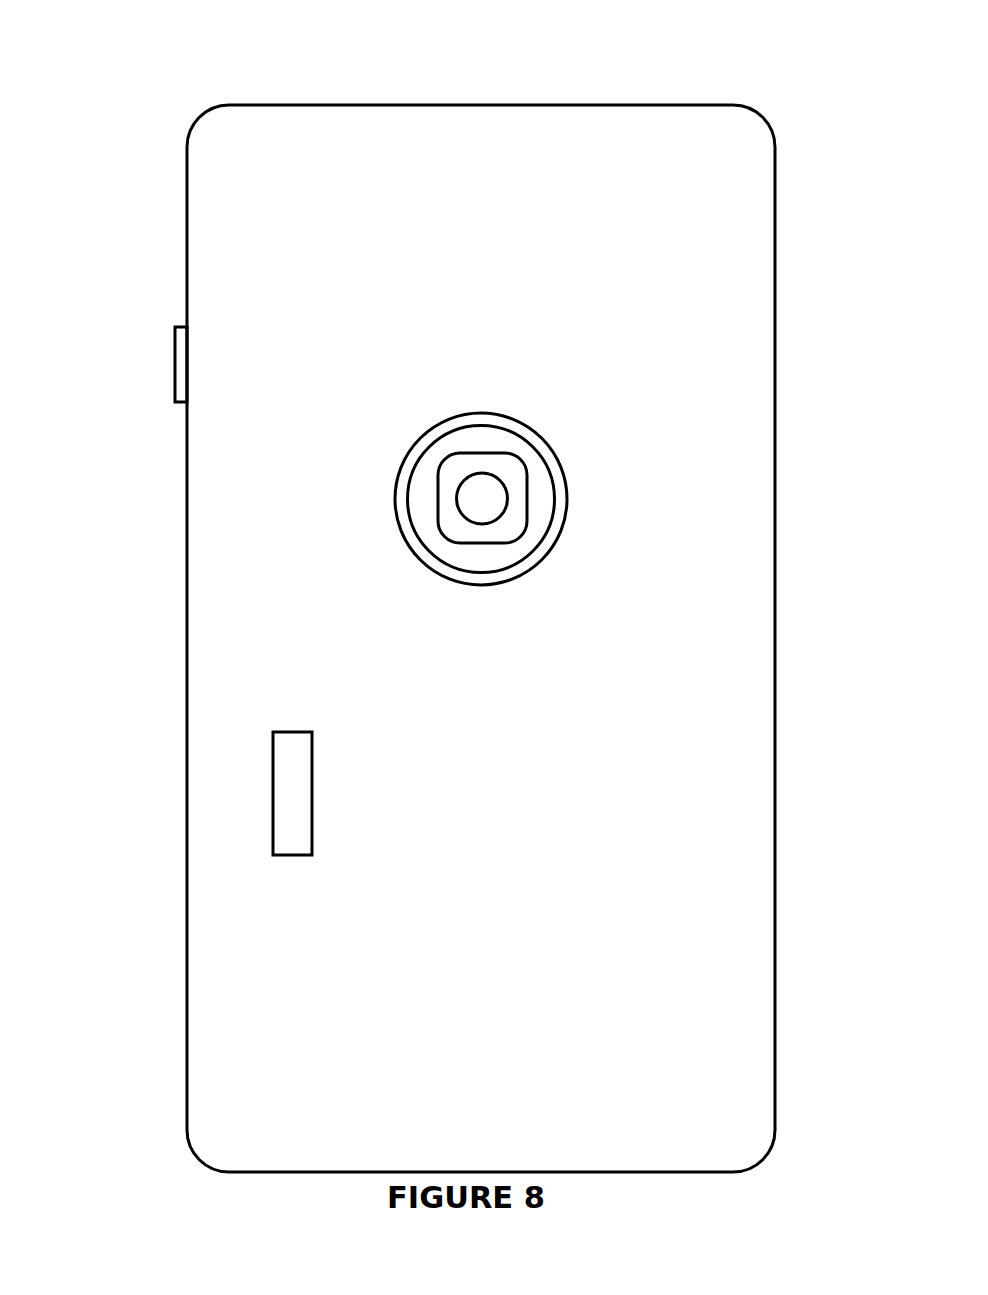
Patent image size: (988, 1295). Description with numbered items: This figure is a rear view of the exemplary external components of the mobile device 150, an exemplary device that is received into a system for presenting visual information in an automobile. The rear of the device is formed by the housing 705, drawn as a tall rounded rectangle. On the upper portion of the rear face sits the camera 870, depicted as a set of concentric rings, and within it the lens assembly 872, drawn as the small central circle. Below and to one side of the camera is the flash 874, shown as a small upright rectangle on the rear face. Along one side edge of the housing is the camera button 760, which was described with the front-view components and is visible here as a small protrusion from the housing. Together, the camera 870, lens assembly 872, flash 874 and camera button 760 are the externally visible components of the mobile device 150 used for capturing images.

The mobile device 150 is at (160, 29).
The housing 705 is at (752, 770).
The camera button 760 is at (175, 366).
The camera 870 is at (537, 528).
The lens assembly 872 is at (507, 497).
The flash 874 is at (273, 793).